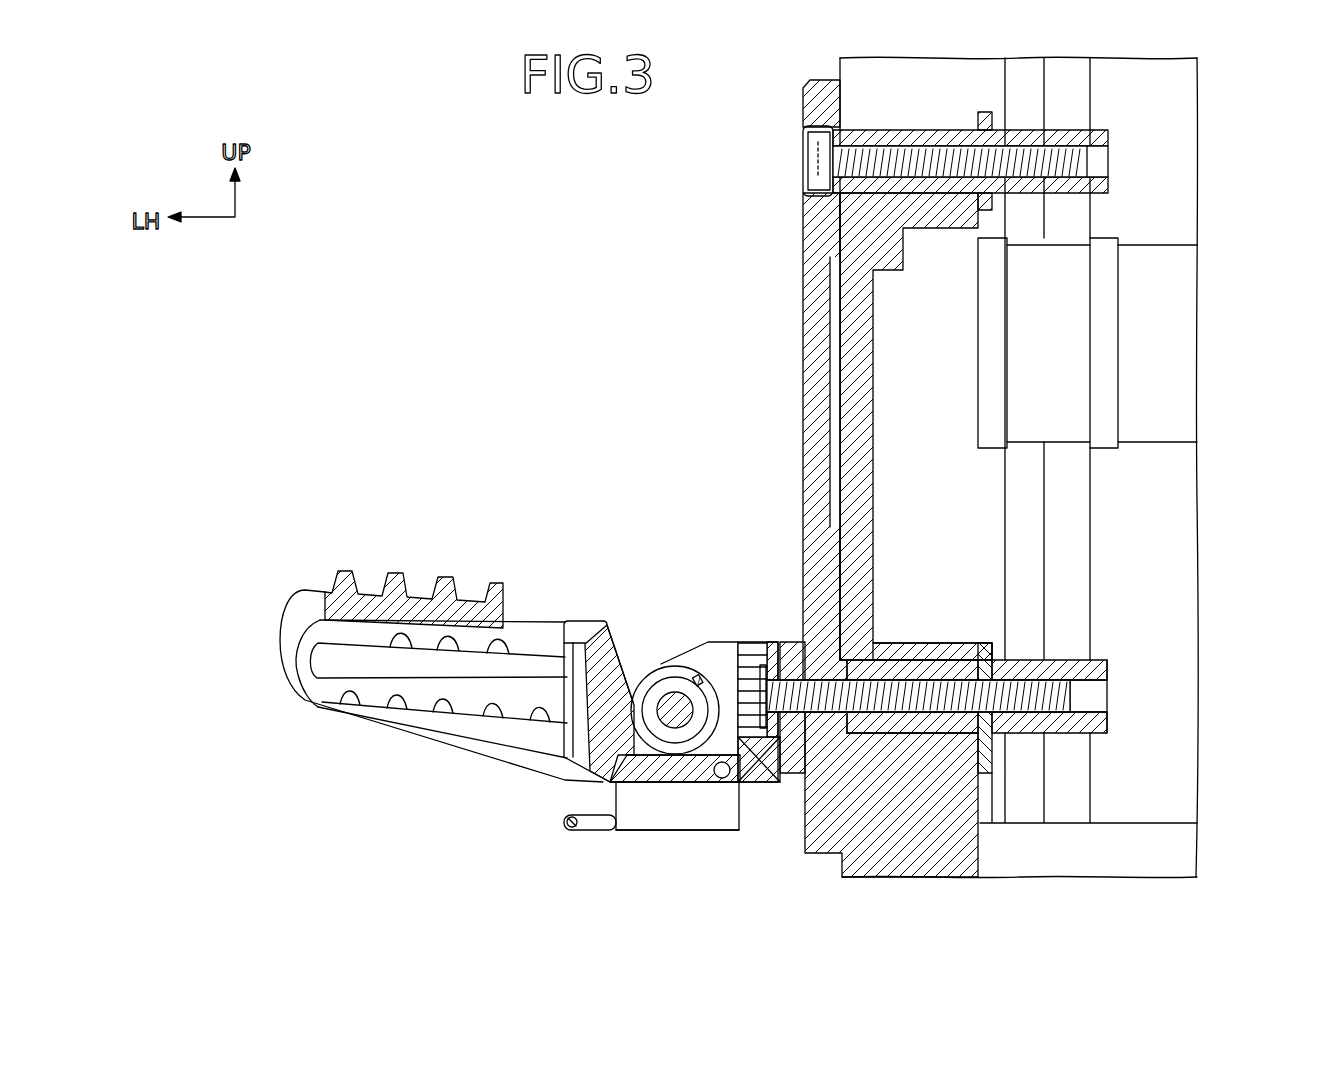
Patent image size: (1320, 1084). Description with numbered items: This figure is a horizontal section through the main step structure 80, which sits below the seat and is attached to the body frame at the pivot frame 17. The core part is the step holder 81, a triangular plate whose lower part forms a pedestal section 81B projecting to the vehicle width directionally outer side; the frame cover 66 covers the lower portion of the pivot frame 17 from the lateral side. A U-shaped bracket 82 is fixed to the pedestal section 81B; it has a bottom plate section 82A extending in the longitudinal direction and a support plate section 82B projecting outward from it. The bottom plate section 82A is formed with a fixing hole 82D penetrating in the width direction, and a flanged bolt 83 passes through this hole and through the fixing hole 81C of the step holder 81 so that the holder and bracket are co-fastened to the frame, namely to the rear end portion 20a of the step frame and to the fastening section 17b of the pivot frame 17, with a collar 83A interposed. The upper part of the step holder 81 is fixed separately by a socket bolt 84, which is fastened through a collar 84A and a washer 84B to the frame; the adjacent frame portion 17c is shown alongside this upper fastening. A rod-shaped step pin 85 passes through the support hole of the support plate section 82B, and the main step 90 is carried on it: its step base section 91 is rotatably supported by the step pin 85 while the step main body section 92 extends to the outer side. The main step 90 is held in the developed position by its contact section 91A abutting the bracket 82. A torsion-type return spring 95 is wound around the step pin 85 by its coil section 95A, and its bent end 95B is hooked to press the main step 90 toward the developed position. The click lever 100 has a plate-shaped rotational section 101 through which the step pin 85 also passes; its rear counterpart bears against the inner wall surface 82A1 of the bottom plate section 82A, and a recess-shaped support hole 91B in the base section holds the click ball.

The main step structure 80 is at (557, 579).
The socket bolt 84 is at (996, 214).
The frame flange 17c is at (1110, 186).
The washer 84B is at (985, 200).
The collar 84A is at (935, 185).
The frame cover 66 is at (1052, 441).
The step holder 81 is at (830, 498).
The pivot frame 17 is at (1065, 508).
The fixing hole 81C is at (830, 690).
The fastening section 17b is at (1067, 655).
The flanged bolt 83 is at (1012, 803).
The one end of return spring 95B is at (622, 662).
The step pin 85 is at (673, 700).
The bracket 82 is at (722, 735).
The fixing hole 82D is at (807, 642).
The support plate section 82B is at (715, 658).
The bottom plate section 82A is at (786, 760).
The step main body section 92 is at (415, 758).
The step base section 91 is at (598, 757).
The main step 90 is at (441, 726).
The coil section 95A is at (672, 750).
The rotational section 101 is at (670, 840).
The contact section 91A is at (707, 782).
The pedestal section 81B is at (793, 767).
The return spring 95 is at (614, 741).
The click lever 100 is at (677, 865).
The support hole 91B is at (718, 778).
The inner wall surface 82A1 is at (767, 757).
The collar 83A is at (922, 740).
The rear end portion 20a is at (993, 760).